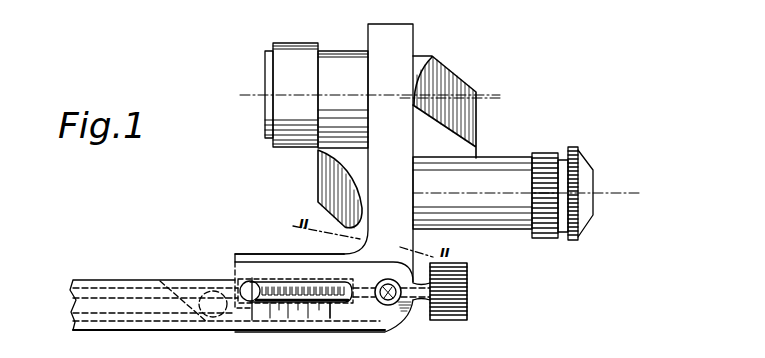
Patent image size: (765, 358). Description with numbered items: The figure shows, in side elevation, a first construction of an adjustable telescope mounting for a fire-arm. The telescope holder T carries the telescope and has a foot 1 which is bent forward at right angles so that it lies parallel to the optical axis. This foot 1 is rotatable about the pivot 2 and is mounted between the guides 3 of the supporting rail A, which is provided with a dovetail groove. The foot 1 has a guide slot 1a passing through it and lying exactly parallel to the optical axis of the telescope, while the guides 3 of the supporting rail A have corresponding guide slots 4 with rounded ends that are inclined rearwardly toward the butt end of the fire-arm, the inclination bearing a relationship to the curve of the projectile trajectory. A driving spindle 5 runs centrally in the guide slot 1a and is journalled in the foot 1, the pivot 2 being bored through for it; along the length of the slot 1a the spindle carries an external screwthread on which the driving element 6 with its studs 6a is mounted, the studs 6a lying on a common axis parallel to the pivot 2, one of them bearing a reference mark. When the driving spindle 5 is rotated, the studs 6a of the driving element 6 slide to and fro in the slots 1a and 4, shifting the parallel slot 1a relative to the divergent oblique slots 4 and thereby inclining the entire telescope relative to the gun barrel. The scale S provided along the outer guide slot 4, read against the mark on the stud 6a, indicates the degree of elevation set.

The telescope holder T is at (397, 58).
The supporting rail A is at (160, 318).
The foot 1 is at (236, 254).
The guide slot 1a is at (333, 272).
The pivot 2 is at (396, 302).
The guide 3 is at (240, 265).
The guide slot 4 is at (339, 312).
The driving spindle 5 is at (467, 284).
The driving element 6 is at (245, 290).
The stud 6a is at (252, 288).
The scale S is at (307, 306).